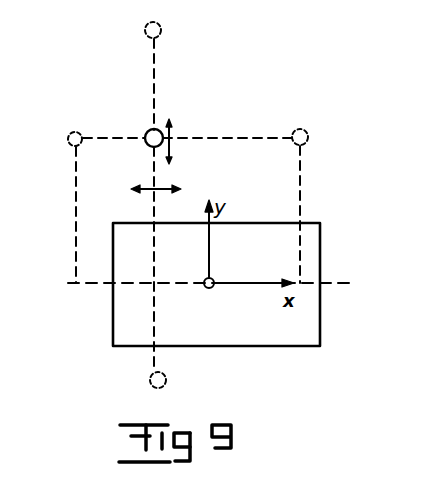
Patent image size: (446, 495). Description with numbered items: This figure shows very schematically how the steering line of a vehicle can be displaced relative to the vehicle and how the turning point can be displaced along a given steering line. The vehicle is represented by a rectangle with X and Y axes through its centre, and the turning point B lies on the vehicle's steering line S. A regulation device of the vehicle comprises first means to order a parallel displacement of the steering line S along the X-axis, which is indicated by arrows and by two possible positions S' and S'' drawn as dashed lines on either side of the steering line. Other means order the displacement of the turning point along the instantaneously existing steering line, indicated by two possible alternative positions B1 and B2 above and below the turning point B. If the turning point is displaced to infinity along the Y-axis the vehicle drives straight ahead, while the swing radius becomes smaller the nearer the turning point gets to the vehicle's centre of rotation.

The turning point B is at (146, 133).
The first alternative position of the turning point B1 is at (164, 29).
The second alternative position of the turning point B2 is at (168, 378).
The steering line S is at (160, 202).
The first possible position of the steering line S' is at (59, 207).
The second possible position of the steering line S'' is at (328, 206).